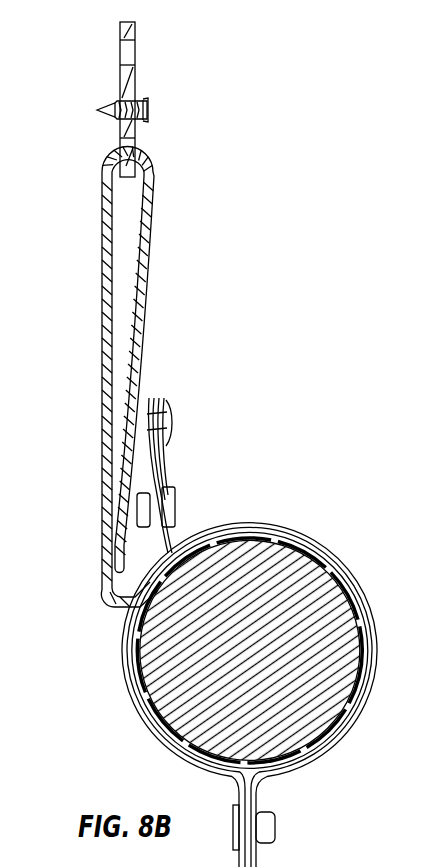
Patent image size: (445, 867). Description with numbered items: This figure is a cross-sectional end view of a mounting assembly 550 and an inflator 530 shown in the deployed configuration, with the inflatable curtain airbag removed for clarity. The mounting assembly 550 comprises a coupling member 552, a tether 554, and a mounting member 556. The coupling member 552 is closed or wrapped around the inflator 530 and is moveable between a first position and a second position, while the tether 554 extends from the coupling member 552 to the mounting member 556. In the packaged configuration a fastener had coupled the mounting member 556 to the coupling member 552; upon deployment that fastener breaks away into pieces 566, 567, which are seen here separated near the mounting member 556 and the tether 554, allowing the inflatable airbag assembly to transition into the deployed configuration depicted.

The mounting assembly 550 is at (40, 186).
The mounting member 556 is at (131, 79).
The fastener piece 566 is at (147, 110).
The tether 554 is at (141, 298).
The fastener piece 567 is at (172, 431).
The inflator 530 is at (275, 583).
The coupling member 552 is at (317, 764).